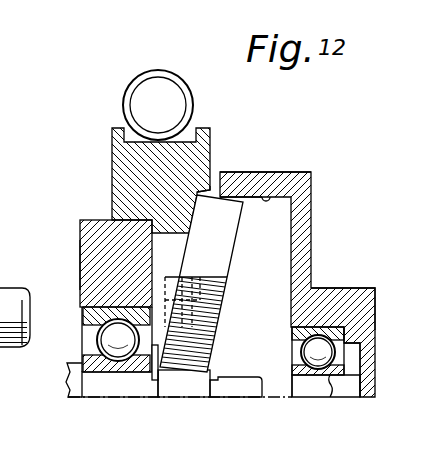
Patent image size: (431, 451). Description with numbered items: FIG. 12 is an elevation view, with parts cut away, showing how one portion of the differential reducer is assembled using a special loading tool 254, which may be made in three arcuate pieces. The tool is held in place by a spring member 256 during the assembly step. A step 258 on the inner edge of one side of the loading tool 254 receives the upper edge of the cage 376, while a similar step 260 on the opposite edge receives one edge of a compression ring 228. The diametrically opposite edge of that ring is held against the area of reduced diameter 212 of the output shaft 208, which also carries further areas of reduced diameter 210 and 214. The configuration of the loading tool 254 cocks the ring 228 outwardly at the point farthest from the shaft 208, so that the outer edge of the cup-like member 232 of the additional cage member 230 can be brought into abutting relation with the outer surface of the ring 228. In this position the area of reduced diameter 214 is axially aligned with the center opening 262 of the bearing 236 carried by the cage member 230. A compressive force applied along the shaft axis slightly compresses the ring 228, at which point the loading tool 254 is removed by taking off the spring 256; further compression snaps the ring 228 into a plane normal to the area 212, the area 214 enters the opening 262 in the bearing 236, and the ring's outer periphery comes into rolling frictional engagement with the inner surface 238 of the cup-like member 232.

The output shaft 208 is at (76, 385).
The area of reduced diameter 210 is at (122, 400).
The area of reduced diameter 212 is at (180, 397).
The area of reduced diameter 214 is at (238, 388).
The compression ring 228 is at (225, 285).
The cage member 230 is at (344, 288).
The cup-like member 232 is at (313, 211).
The bearing 236 is at (368, 312).
The inner surface 238 is at (281, 197).
The loading tool 254 is at (211, 145).
The spring member 256 is at (124, 92).
The step 258 is at (153, 221).
The step 260 is at (210, 187).
The center opening 262 is at (328, 380).
The cage 376 is at (90, 258).